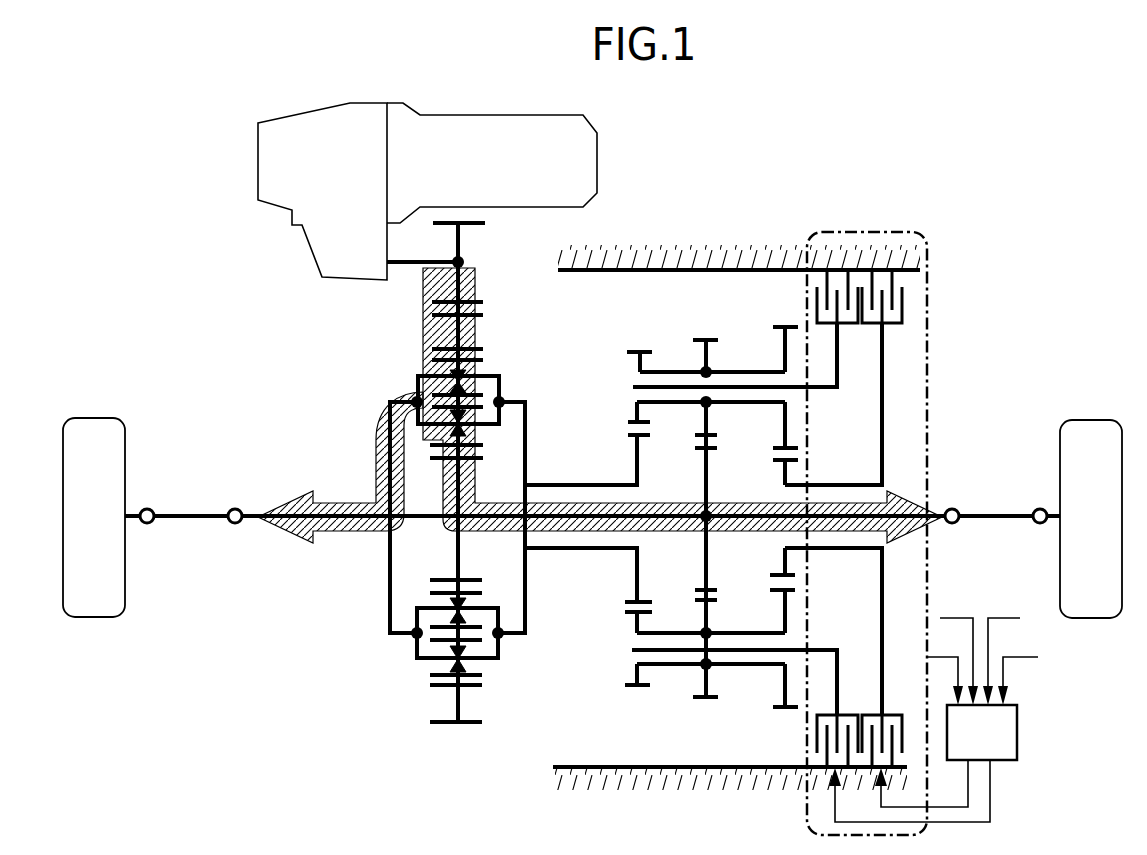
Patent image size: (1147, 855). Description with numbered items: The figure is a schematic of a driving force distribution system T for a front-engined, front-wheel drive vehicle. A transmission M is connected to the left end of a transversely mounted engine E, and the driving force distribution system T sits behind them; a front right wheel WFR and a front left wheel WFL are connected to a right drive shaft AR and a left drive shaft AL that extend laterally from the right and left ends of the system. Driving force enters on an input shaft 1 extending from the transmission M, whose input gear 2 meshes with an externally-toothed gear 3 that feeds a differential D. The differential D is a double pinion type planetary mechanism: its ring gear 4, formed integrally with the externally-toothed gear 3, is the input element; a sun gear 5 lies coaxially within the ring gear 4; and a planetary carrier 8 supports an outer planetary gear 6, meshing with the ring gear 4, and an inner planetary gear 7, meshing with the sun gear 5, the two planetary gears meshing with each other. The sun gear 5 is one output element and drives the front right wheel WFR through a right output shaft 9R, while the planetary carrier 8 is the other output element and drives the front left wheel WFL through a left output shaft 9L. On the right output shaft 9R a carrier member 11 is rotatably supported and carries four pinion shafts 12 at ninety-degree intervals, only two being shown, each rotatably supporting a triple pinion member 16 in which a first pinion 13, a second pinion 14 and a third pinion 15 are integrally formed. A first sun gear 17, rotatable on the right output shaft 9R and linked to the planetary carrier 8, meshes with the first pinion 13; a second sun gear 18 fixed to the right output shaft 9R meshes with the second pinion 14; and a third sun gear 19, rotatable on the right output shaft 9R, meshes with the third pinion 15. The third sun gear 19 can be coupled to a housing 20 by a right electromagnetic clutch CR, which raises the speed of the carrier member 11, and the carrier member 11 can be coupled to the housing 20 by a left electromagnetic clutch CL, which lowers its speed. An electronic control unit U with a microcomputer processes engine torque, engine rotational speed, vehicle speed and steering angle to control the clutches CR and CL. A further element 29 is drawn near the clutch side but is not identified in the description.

The input shaft 1 is at (437, 261).
The input gear 2 is at (485, 223).
The externally-toothed gear 3 is at (485, 318).
The ring gear 4 is at (485, 350).
The sun gear 5 is at (445, 455).
The outer planetary gear 6 is at (488, 360).
The inner planetary gear 7 is at (485, 440).
The planetary carrier 8 is at (390, 425).
The left output shaft 9L is at (305, 510).
The right output shaft 9R is at (887, 515).
The carrier member 11 is at (848, 345).
The pinion shaft 12 is at (790, 389).
The first pinion 13 is at (647, 348).
The second pinion 14 is at (708, 338).
The third pinion 15 is at (782, 325).
The triple pinion member 16 is at (747, 366).
The first sun gear 17 is at (627, 437).
The second sun gear 18 is at (697, 450).
The third sun gear 19 is at (773, 460).
The housing 20 is at (720, 263).
The connecting shaft 29 is at (855, 483).
The transmission M is at (338, 168).
The engine E is at (497, 168).
The differential D is at (394, 376).
The driving force distribution system T is at (783, 221).
The left electromagnetic clutch CL is at (842, 265).
The right electromagnetic clutch CR is at (908, 306).
The electronic control unit U is at (972, 750).
The front left wheel WFL is at (98, 417).
The front right wheel WFR is at (1090, 418).
The left drive shaft AL is at (197, 512).
The right drive shaft AR is at (998, 515).